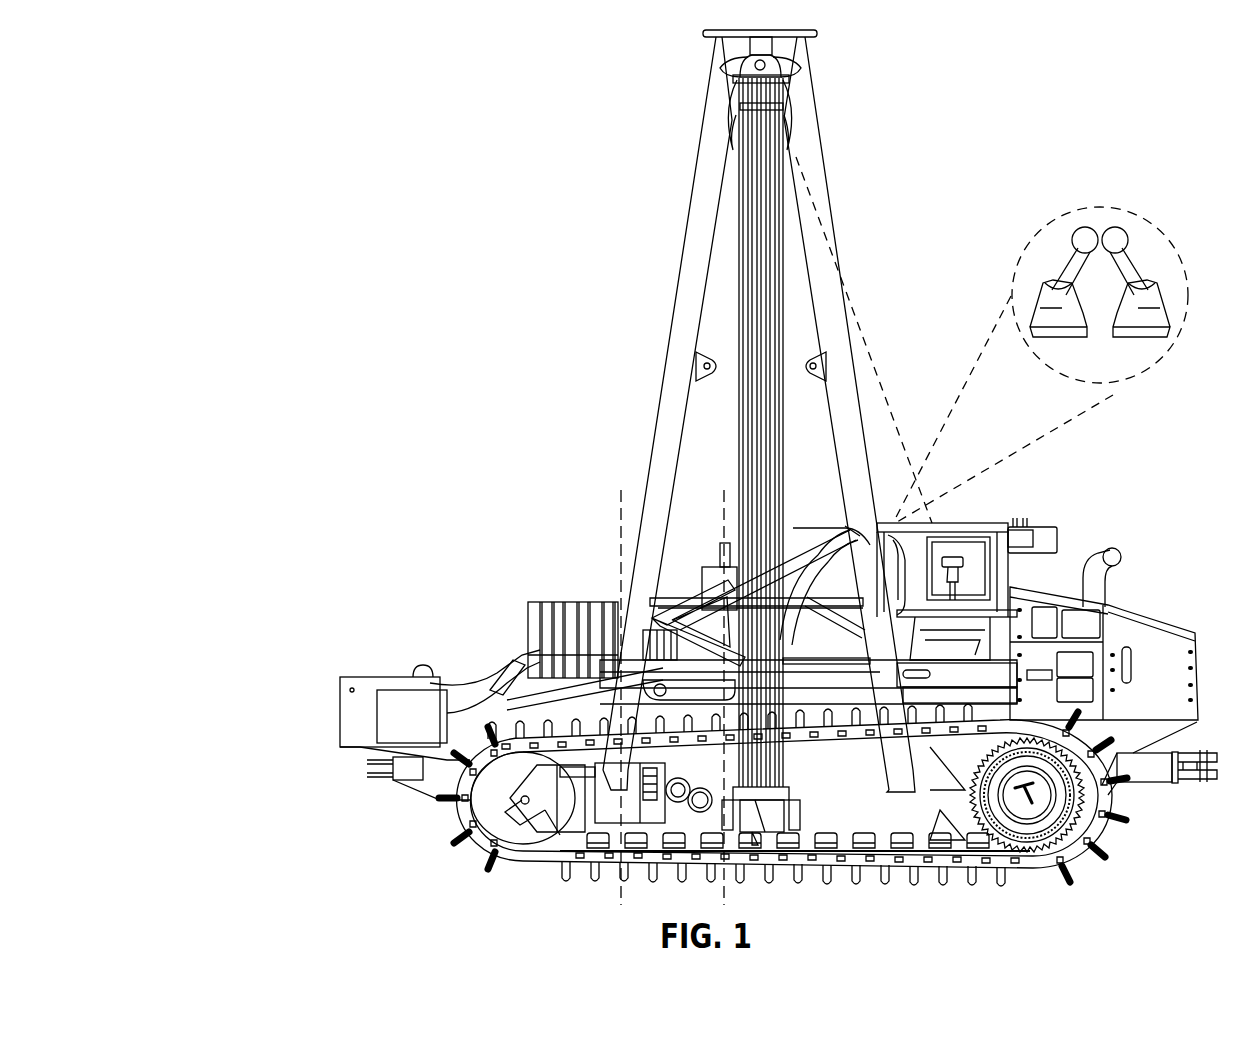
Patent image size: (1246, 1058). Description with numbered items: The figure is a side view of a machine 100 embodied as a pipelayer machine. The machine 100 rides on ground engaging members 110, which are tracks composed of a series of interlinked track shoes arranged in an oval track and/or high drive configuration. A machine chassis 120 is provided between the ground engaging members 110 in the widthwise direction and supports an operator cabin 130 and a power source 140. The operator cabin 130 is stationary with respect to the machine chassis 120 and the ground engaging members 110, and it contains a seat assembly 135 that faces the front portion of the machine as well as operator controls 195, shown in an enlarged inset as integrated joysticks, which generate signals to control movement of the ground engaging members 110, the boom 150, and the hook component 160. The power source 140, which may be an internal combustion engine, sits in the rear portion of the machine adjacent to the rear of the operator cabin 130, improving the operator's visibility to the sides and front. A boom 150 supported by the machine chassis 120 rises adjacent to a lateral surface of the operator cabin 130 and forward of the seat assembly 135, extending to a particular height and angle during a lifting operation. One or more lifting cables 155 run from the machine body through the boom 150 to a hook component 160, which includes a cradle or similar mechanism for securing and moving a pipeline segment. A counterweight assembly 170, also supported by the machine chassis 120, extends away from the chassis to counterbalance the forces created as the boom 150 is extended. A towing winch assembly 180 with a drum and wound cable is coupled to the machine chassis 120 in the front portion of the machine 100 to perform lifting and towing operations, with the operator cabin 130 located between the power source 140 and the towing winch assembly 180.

The machine 100 is at (226, 60).
The ground engaging members 110 is at (455, 850).
The machine chassis 120 is at (432, 794).
The operator cabin 130 is at (1050, 459).
The seat assembly 135 is at (953, 570).
The power source 140 is at (1135, 618).
The boom 150 is at (825, 310).
The lifting cables 155 is at (782, 275).
The hook component 160 is at (784, 808).
The counterweight assembly 170 is at (540, 630).
The towing winch assembly 180 is at (345, 698).
The operator controls 195 is at (1140, 212).